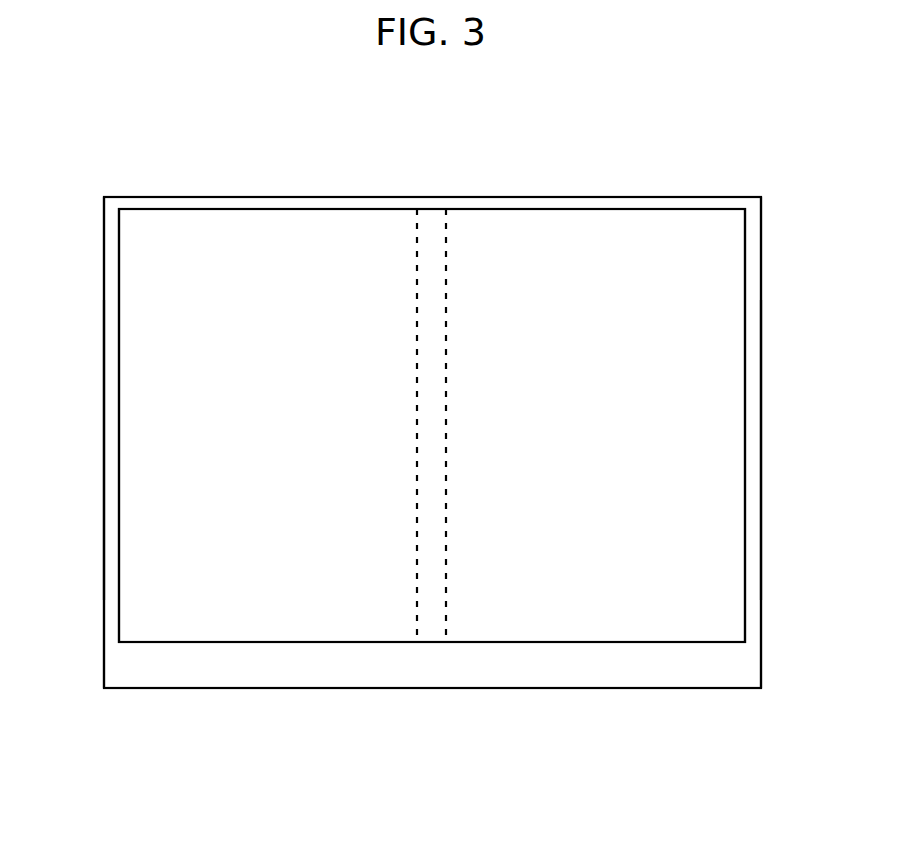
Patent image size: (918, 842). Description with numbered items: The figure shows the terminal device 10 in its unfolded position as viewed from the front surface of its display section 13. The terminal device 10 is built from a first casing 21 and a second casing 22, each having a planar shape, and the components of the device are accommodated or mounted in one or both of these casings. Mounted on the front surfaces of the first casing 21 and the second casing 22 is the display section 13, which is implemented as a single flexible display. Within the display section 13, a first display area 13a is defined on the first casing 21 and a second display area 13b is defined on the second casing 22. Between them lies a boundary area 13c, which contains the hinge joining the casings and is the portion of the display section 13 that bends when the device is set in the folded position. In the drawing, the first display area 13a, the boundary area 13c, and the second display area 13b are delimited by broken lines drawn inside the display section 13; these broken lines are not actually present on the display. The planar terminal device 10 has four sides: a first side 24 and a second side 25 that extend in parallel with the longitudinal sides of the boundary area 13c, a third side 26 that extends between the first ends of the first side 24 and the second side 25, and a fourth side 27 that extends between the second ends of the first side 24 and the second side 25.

The terminal device 10 is at (697, 172).
The display section 13 is at (502, 210).
The first display area 13a is at (207, 235).
The second display area 13b is at (583, 235).
The boundary area 13c is at (428, 228).
The first casing 21 is at (112, 210).
The second casing 22 is at (752, 218).
The first side 24 is at (103, 393).
The second side 25 is at (761, 370).
The third side 26 is at (320, 197).
The fourth side 27 is at (407, 688).